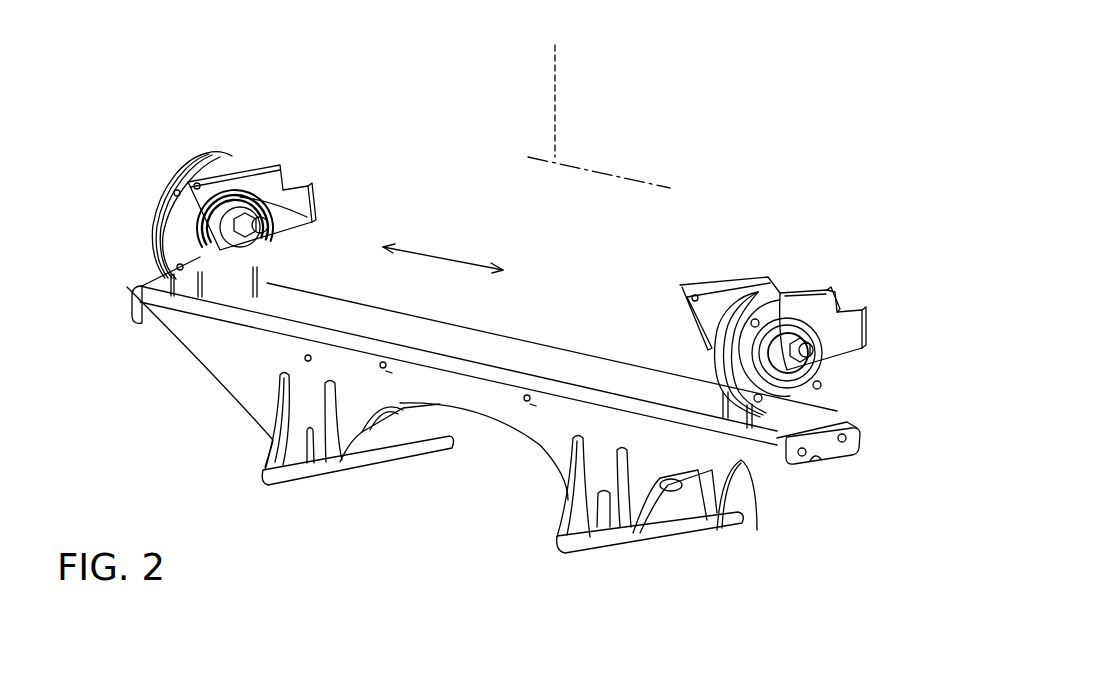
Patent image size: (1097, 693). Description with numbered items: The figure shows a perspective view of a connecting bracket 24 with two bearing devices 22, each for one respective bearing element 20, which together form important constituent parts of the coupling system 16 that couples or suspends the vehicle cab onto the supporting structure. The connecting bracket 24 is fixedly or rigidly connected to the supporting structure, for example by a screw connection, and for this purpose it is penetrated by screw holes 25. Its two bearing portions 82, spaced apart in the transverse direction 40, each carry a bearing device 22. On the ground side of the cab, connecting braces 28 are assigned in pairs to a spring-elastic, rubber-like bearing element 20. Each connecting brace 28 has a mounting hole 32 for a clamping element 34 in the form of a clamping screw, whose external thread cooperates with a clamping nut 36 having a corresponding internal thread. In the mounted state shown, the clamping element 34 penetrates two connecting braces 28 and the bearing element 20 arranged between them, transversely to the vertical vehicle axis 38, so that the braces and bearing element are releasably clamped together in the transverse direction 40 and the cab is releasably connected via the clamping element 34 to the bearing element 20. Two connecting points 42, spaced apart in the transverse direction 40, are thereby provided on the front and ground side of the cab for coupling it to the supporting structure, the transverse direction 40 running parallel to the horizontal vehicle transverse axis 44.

The coupling system 16 is at (465, 165).
The bearing element 20 is at (184, 288).
The bearing device 22 is at (138, 318).
The connecting bracket 24 is at (536, 341).
The screw holes 25 is at (267, 470).
The connecting braces 28 is at (205, 158).
The mounting hole 32 is at (300, 210).
The clamping element 34 is at (262, 238).
The clamping nut 36 is at (262, 295).
The vertical vehicle axis 38 is at (557, 90).
The transverse direction 40 is at (448, 258).
The connecting points 42 is at (247, 143).
The horizontal vehicle transverse axis 44 is at (602, 173).
The bearing portions 82 is at (139, 299).